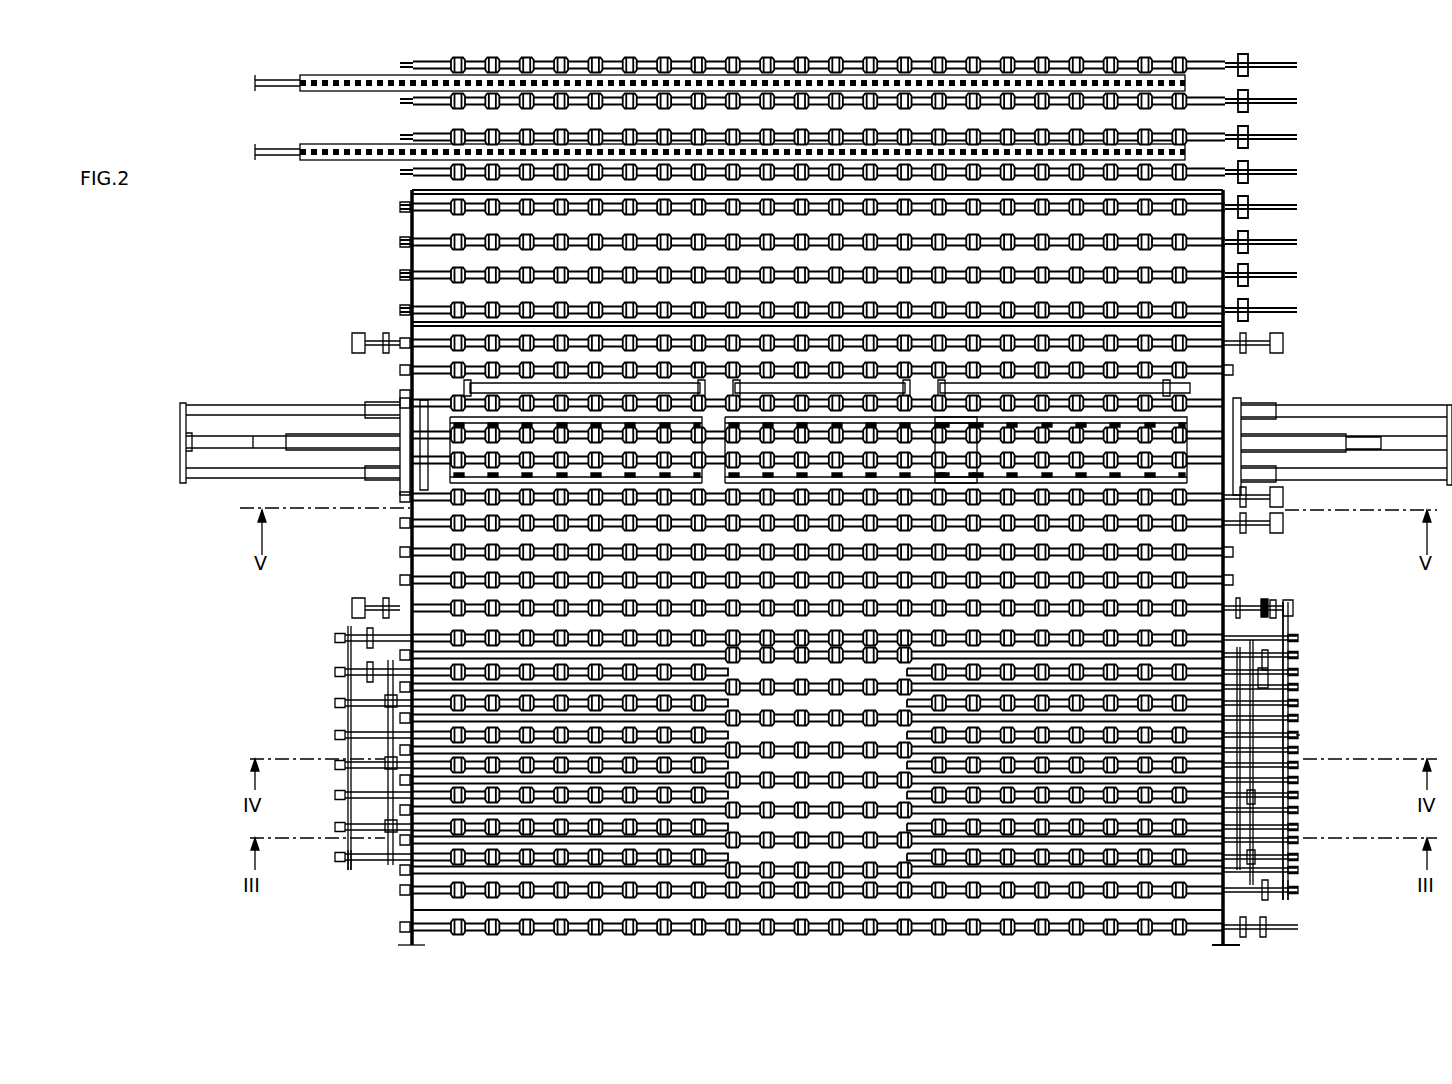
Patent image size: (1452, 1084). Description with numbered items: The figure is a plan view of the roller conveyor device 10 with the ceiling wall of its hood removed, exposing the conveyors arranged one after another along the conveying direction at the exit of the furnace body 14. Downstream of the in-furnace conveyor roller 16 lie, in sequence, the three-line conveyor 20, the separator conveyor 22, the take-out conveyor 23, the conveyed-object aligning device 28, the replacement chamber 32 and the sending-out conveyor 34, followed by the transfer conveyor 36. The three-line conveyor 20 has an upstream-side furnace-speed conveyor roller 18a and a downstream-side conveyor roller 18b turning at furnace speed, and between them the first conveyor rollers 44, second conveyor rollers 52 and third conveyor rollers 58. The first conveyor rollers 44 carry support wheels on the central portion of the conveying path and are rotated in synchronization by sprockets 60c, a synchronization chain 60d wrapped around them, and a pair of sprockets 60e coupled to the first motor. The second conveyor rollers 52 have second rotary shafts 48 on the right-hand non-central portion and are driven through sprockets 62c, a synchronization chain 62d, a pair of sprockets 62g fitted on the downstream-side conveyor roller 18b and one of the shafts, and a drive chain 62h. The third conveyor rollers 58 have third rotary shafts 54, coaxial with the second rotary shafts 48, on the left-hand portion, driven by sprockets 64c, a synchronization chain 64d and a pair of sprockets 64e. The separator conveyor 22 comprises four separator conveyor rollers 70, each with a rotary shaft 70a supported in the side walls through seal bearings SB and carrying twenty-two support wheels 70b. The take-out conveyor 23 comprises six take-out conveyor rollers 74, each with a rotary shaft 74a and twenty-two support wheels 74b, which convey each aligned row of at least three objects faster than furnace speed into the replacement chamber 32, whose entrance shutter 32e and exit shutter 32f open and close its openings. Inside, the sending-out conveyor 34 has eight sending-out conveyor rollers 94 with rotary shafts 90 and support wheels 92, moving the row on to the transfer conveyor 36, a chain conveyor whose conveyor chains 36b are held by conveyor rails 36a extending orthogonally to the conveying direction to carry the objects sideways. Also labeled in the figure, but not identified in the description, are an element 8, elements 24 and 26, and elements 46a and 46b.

The sheet 8 is at (661, 151).
The roller conveyor device 10 is at (873, 517).
The furnace body 14 is at (405, 918).
The in-furnace conveyor roller 16 is at (1283, 932).
The upstream-side furnace-speed conveyor roller 18a is at (430, 895).
The downstream-side conveyor roller 18b is at (348, 630).
The three-line conveyor 20 is at (763, 757).
The separator conveyor 22 is at (749, 565).
The take-out conveyor 23 is at (791, 408).
The guide bar 24 is at (470, 383).
The cylinder actuator 26 is at (338, 398).
The conveyed-object aligning device 28 is at (707, 407).
The replacement chamber 32 is at (830, 187).
The entrance shutter 32e is at (856, 301).
The exit shutter 32f is at (1210, 195).
The sending-out conveyor 34 is at (856, 187).
The transfer conveyor 36 is at (250, 200).
The conveyor rails 36a is at (300, 84).
The conveyor chains 36b is at (392, 92).
The first conveyor rollers 44 is at (822, 670).
The right support bar 46a is at (1288, 900).
The left support bar 46b is at (348, 868).
The second rotary shafts 48 is at (1296, 740).
The second conveyor rollers 52 is at (885, 667).
The third rotary shafts 54 is at (367, 672).
The third conveyor rollers 58 is at (755, 667).
The sprockets 60c is at (1240, 650).
The synchronization chain 60d is at (1258, 700).
The pair of sprockets 60e is at (1288, 660).
The sprockets 62c is at (1255, 855).
The synchronization chain 62d is at (1255, 795).
The pair of sprockets 62g is at (1258, 640).
The drive chain 62h is at (1282, 607).
The sprockets 64c is at (388, 700).
The synchronization chain 64d is at (388, 733).
The pair of sprockets 64e is at (367, 640).
The separator conveyor rollers 70 is at (1300, 519).
The rotary shaft 70a is at (460, 522).
The support wheels 70b is at (457, 548).
The take-out conveyor rollers 74 is at (1300, 346).
The rotary shaft 74a is at (405, 372).
The support wheels 74b is at (462, 340).
The rotary shaft 90 is at (420, 240).
The support wheels 92 is at (458, 203).
The sending-out conveyor rollers 94 is at (398, 208).
The seal bearings SB is at (470, 520).